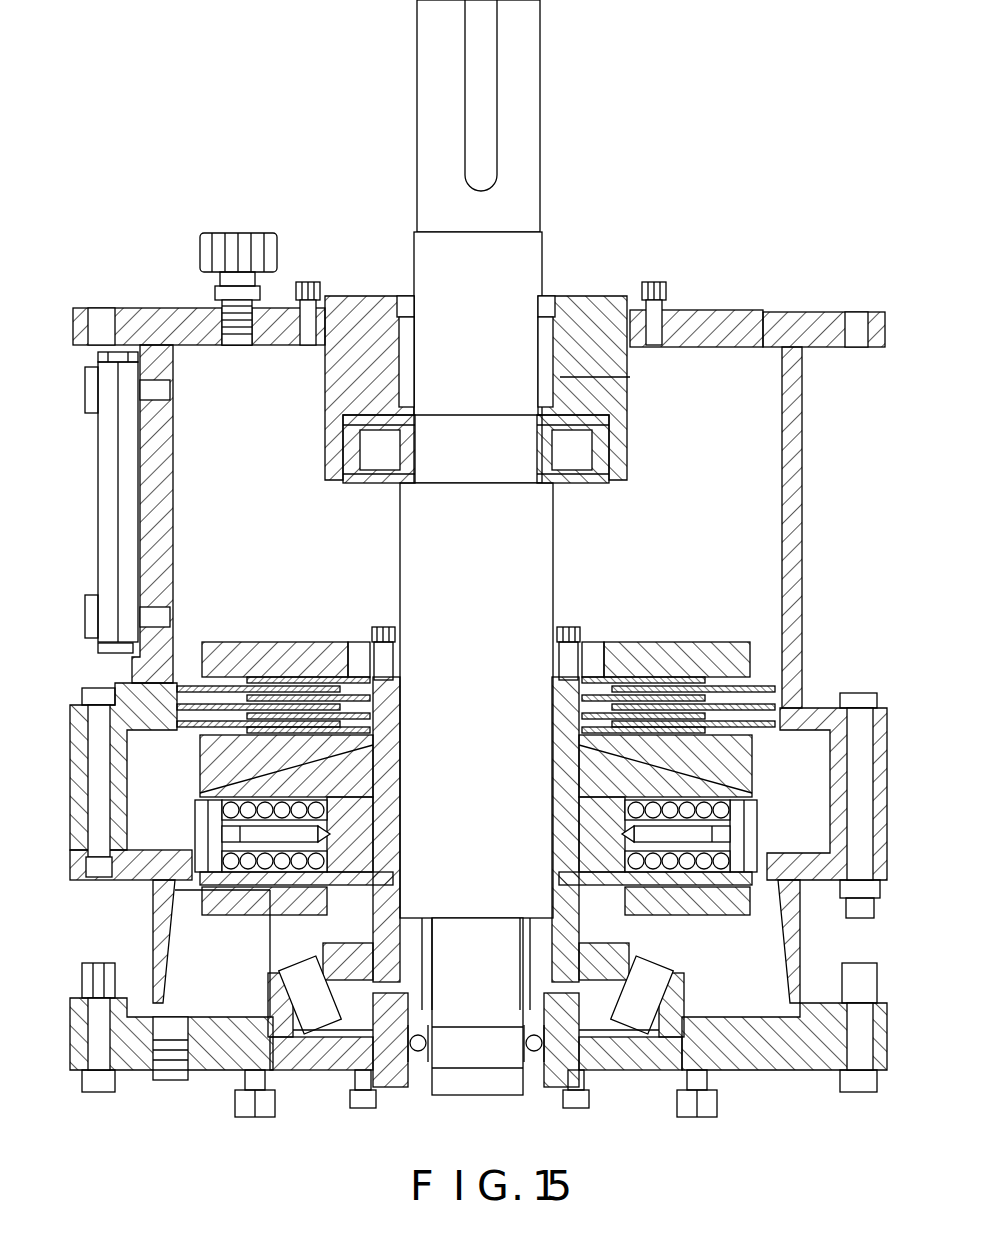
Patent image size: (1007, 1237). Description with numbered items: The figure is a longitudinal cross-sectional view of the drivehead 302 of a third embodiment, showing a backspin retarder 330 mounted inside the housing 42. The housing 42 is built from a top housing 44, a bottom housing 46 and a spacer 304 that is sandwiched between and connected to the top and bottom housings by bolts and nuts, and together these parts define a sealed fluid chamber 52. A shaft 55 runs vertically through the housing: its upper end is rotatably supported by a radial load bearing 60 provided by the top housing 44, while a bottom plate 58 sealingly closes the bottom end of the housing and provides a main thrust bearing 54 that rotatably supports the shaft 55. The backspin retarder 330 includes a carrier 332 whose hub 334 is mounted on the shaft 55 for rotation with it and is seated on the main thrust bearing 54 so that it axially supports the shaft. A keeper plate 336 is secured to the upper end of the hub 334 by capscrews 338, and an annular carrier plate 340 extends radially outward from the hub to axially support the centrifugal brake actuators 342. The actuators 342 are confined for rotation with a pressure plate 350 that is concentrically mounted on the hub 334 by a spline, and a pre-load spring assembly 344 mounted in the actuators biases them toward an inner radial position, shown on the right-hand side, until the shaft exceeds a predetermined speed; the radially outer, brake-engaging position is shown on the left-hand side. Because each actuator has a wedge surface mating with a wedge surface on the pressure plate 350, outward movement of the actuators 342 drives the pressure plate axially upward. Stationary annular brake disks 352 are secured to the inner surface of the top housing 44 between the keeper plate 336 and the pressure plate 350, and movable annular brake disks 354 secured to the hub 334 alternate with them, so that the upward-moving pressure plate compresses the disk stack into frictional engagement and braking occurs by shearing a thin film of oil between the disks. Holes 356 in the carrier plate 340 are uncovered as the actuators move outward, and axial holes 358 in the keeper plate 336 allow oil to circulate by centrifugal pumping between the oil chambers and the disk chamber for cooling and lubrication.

The drivehead 302 is at (317, 172).
The housing 42 is at (702, 308).
The top housing 44 is at (800, 443).
The sealed fluid chamber 52 is at (722, 453).
The shaft 55 is at (530, 556).
The radial load bearing 60 is at (343, 487).
The backspin retarder 330 is at (207, 622).
The carrier 332 is at (213, 920).
The hub 334 is at (400, 740).
The keeper plate 336 is at (622, 642).
The capscrews 338 is at (378, 632).
The annular carrier plate 340 is at (258, 916).
The centrifugal brake actuators 342 is at (196, 794).
The pre-load spring assembly 344 is at (194, 844).
The pressure plate 350 is at (790, 712).
The stationary annular brake disks 352 is at (778, 700).
The movable annular brake disks 354 is at (682, 730).
The holes 356 is at (355, 912).
The axial holes 358 is at (380, 668).
The spacer 304 is at (880, 720).
The bottom housing 46 is at (155, 940).
The main thrust bearing 54 is at (700, 998).
The bottom plate 58 is at (215, 1050).